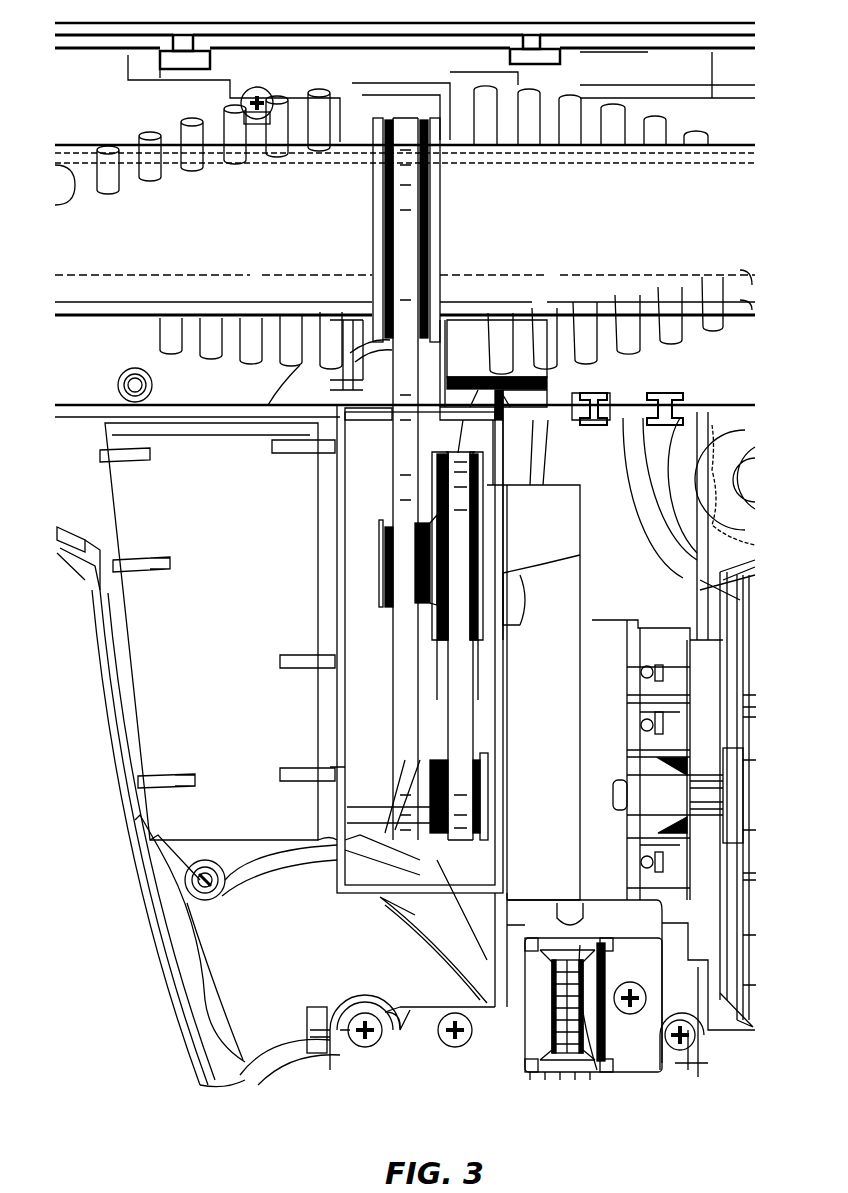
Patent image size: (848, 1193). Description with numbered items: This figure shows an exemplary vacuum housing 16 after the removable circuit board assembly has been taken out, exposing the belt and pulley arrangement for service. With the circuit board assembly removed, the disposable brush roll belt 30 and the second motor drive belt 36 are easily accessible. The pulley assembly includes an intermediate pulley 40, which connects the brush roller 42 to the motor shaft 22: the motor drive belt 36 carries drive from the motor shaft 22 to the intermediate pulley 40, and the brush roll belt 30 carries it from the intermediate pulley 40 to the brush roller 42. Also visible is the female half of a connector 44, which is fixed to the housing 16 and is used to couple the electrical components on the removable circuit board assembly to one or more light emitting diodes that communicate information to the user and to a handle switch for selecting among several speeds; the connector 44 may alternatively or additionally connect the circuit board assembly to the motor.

The vacuum housing 16 is at (147, 933).
The motor shaft 22 is at (655, 797).
The brush roll belt 30 is at (400, 247).
The motor drive belt 36 is at (460, 718).
The intermediate pulley 40 is at (420, 552).
The brush roller 42 is at (718, 175).
The connector 44 is at (587, 977).